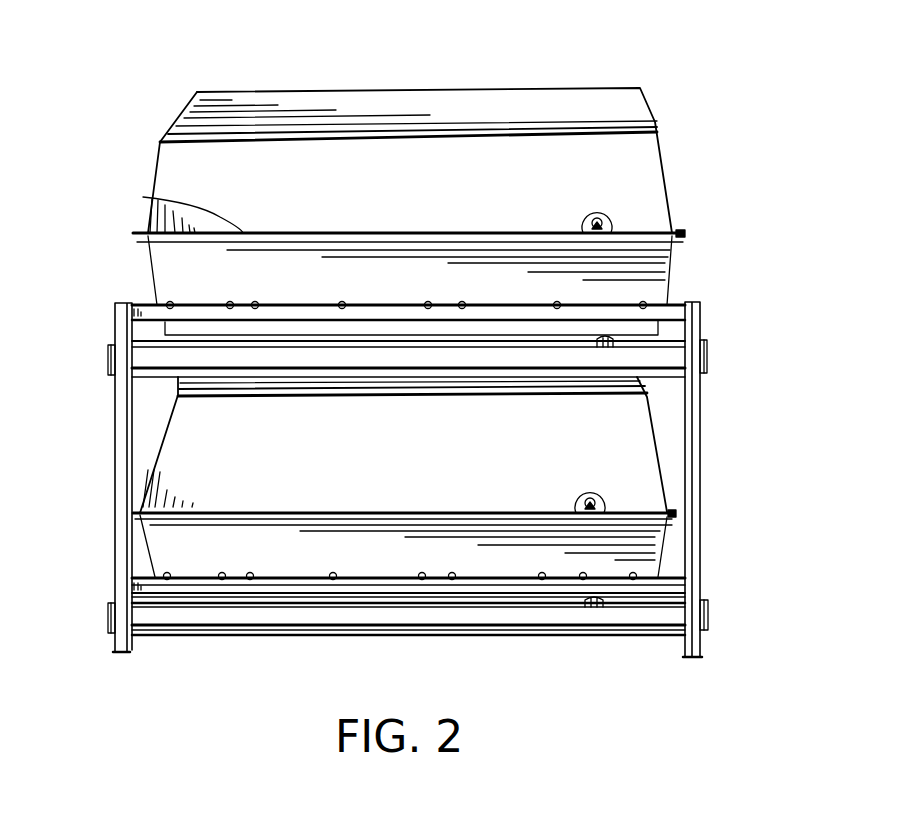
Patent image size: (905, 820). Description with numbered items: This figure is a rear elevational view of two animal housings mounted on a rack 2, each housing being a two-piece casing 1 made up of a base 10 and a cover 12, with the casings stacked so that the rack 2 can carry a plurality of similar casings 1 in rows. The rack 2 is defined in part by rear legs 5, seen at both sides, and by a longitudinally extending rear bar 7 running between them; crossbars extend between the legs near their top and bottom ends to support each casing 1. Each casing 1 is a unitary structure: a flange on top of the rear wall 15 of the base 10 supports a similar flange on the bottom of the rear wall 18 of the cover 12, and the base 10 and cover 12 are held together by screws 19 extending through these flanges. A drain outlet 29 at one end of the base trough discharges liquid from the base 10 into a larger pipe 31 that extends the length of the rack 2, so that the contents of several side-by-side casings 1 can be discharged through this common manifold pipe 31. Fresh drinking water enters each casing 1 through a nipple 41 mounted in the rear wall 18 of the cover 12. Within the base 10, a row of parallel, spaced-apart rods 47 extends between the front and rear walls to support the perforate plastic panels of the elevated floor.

The casing 1 is at (688, 111).
The rack 2 is at (116, 303).
The rear leg 5 is at (120, 650).
The rear bar 7 is at (675, 310).
The base 10 is at (165, 268).
The cover 12 is at (580, 107).
The rear wall 15 is at (314, 291).
The rear wall 18 is at (491, 194).
The screws 19 is at (143, 197).
The drain outlet 29 is at (600, 348).
The pipe 31 is at (670, 362).
The nipple 41 is at (603, 210).
The rods 47 is at (255, 303).